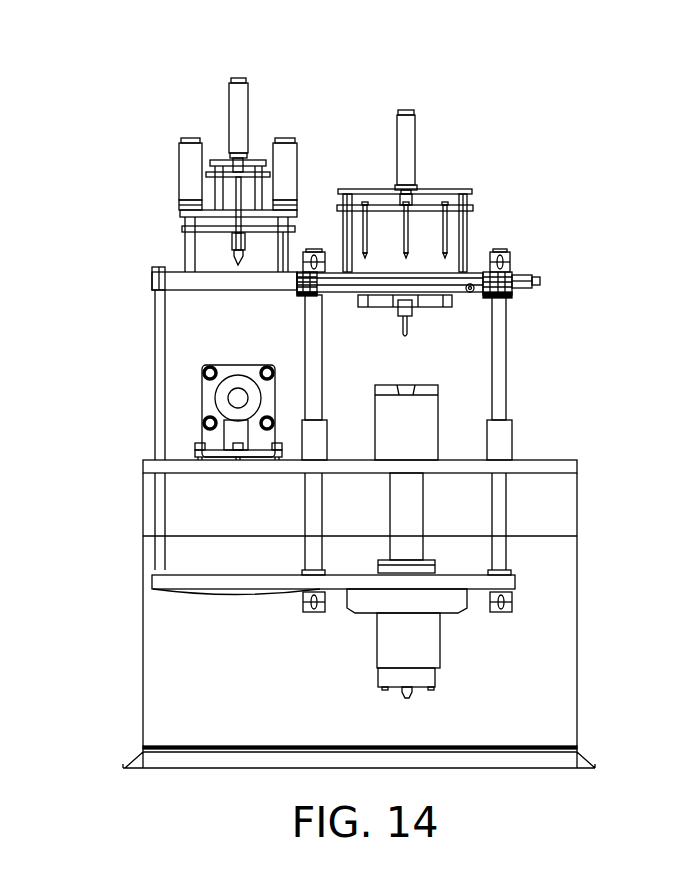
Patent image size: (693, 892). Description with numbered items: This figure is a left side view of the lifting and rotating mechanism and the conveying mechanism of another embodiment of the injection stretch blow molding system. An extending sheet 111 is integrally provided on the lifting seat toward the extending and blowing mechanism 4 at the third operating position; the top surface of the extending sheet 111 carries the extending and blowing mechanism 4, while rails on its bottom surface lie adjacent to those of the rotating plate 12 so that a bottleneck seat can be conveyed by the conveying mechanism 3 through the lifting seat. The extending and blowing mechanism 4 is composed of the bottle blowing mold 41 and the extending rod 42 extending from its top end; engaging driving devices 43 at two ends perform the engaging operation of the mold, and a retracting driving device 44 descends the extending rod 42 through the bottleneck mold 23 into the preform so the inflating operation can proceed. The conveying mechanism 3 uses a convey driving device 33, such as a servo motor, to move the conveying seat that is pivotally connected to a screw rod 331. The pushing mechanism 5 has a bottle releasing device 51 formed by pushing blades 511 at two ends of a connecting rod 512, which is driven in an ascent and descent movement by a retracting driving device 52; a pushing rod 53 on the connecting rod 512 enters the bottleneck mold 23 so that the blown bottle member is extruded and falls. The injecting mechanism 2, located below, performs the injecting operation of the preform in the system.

The injecting mechanism 2 is at (423, 418).
The bottleneck mold 23 is at (423, 638).
The conveying mechanism 3 is at (547, 280).
The convey driving device 33 is at (584, 302).
The screw rod 331 is at (474, 292).
The rotating plate 12 is at (508, 262).
The extending and blowing mechanism 4 is at (217, 128).
The bottle blowing mold 41 is at (207, 397).
The extending rod 42 is at (238, 262).
The engaging driving device 43 is at (223, 437).
The retracting driving device 44 is at (185, 167).
The pushing mechanism 5 is at (438, 178).
The bottle releasing device 51 is at (473, 208).
The pushing blade 511 is at (467, 255).
The connecting rod 512 is at (472, 191).
The retracting driving device 52 is at (403, 150).
The pushing rod 53 is at (403, 245).
The extending sheet 111 is at (192, 282).